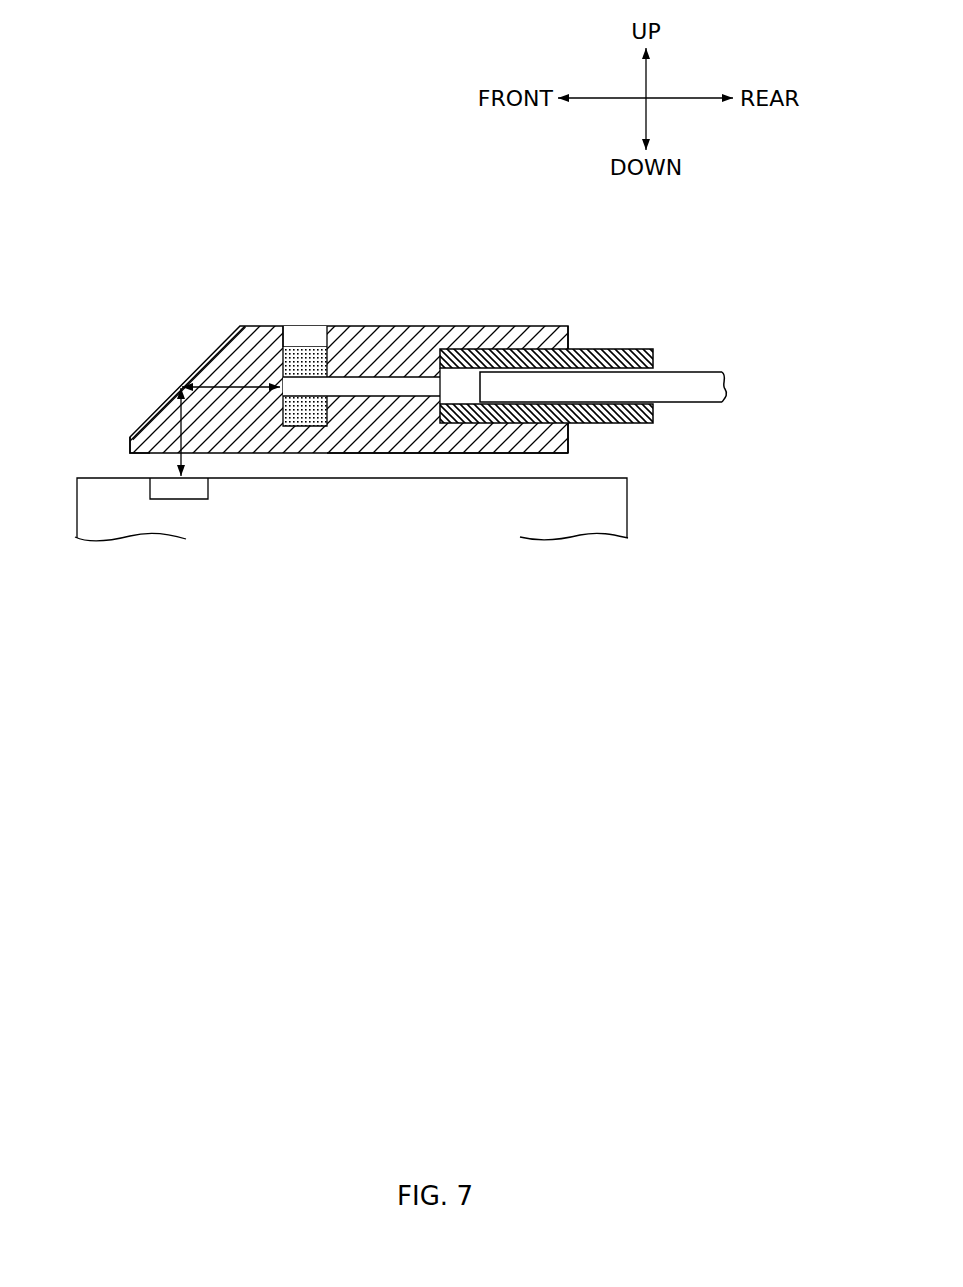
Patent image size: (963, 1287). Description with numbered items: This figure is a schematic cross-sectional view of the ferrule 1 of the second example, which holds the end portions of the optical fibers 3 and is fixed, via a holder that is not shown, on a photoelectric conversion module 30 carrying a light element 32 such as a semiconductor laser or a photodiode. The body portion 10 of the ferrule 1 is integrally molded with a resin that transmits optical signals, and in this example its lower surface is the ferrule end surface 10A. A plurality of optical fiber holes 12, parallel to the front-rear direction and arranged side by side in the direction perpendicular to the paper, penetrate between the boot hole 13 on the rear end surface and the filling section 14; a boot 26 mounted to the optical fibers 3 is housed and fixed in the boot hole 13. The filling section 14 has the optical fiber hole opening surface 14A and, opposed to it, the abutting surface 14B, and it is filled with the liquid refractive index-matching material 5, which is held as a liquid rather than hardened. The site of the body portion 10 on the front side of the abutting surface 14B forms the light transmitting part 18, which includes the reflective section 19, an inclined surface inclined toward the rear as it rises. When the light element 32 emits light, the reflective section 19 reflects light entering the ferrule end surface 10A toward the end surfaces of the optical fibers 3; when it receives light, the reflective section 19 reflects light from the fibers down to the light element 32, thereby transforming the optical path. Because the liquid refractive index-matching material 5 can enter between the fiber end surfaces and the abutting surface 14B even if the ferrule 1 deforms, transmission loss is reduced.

The ferrule 1 is at (510, 260).
The optical fiber 3 is at (368, 386).
The liquid refractive index-matching material 5 is at (291, 414).
The body portion 10 is at (422, 336).
The ferrule end surface 10A is at (148, 453).
The optical fiber hole 12 is at (417, 398).
The boot hole 13 is at (512, 424).
The filling section 14 is at (298, 333).
The optical fiber hole opening surface 14A is at (327, 329).
The abutting surface 14B is at (284, 329).
The light transmitting part 18 is at (230, 416).
The reflective section 19 is at (194, 382).
The boot 26 is at (611, 356).
The photoelectric conversion module 30 is at (618, 508).
The light element 32 is at (156, 494).